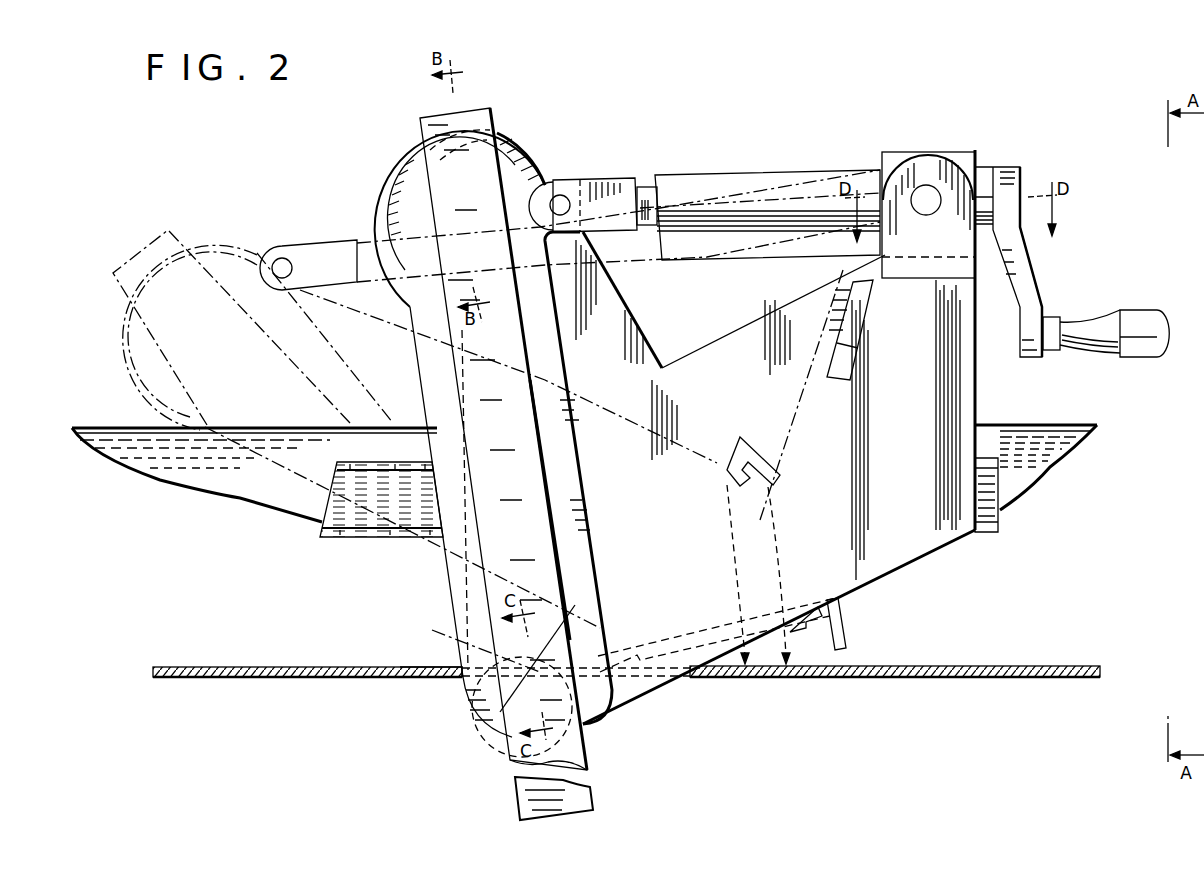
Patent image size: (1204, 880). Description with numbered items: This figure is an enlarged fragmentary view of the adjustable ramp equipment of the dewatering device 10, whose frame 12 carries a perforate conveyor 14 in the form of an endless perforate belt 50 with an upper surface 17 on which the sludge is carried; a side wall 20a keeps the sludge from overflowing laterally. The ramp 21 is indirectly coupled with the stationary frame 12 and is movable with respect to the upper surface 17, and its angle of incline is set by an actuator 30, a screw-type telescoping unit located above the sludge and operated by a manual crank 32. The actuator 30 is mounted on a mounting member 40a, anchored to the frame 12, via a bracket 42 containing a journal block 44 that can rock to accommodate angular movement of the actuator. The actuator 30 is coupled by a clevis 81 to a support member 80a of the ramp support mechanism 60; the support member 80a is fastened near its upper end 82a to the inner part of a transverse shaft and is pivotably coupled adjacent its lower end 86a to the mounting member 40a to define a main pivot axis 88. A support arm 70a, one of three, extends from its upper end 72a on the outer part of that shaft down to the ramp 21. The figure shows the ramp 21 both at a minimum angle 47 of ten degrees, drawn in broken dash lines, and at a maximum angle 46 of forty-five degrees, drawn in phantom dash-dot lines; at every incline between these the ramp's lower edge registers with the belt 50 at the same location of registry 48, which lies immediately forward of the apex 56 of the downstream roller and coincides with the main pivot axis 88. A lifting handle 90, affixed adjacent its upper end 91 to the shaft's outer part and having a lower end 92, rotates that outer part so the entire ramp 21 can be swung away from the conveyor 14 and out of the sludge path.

The dewatering device 10 is at (250, 693).
The frame 12 is at (355, 520).
The perforate conveyor 14 is at (862, 679).
The upper surface 17 is at (218, 667).
The side wall 20a is at (401, 428).
The ramp 21 is at (772, 485).
The actuator 30 is at (697, 172).
The manual crank 32 is at (1048, 318).
The mounting member 40a is at (948, 535).
The bracket 42 is at (945, 162).
The journal block 44 is at (890, 155).
The maximum angle 46 is at (778, 552).
The minimum angle 47 is at (752, 672).
The location of registry 48 is at (600, 712).
The endless perforate belt 50 is at (415, 678).
The apex 56 is at (446, 636).
The ramp support mechanism 60 is at (405, 287).
The support arm 70a is at (655, 350).
The upper end 72a is at (418, 148).
The support member 80a is at (550, 372).
The clevis 81 is at (582, 183).
The upper end 82a is at (492, 122).
The lower end 86a is at (512, 771).
The main pivot axis 88 is at (494, 718).
The lifting handle 90 is at (554, 472).
The upper end 91 is at (479, 105).
The lower end 92 is at (586, 806).